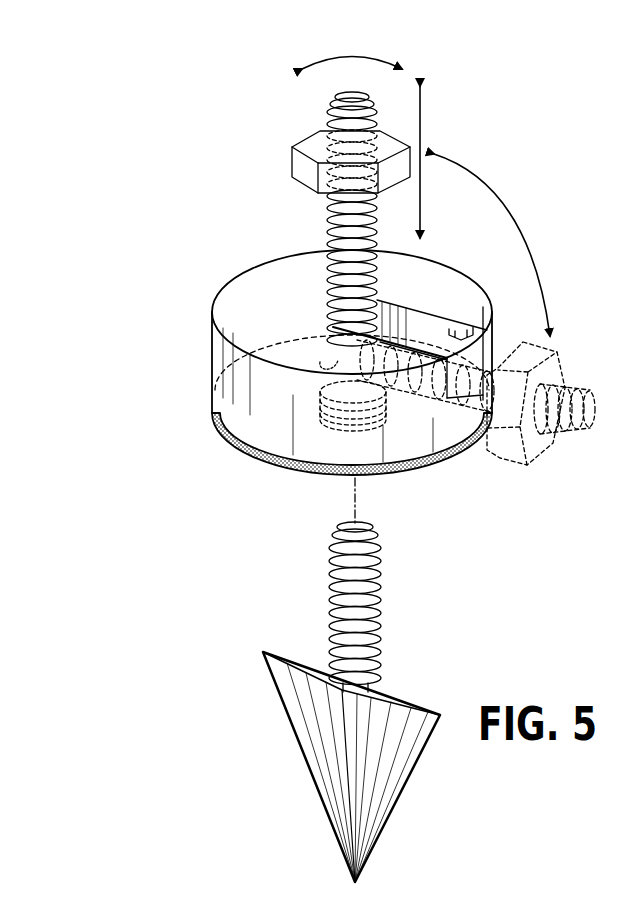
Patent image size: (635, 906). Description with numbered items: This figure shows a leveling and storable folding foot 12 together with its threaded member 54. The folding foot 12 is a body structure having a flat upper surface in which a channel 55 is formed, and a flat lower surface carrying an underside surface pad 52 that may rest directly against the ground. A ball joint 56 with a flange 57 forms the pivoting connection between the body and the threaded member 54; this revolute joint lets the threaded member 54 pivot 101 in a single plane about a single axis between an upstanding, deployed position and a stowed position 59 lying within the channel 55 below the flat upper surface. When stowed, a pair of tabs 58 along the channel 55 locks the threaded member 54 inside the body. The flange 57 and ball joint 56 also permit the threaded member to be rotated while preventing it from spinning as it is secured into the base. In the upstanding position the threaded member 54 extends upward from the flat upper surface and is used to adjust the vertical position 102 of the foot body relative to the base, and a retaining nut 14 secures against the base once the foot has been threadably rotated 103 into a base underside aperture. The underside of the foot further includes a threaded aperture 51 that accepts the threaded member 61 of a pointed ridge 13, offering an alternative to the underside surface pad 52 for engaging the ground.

The folding foot 12 is at (205, 238).
The pointed ridge 13 is at (230, 763).
The retaining nut 14 is at (294, 165).
The threaded aperture 51 is at (338, 428).
The underside surface pad 52 is at (258, 464).
The threaded member 54 is at (327, 219).
The channel 55 is at (425, 322).
The ball joint 56 is at (342, 371).
The flange 57 is at (343, 352).
The tabs 58 is at (462, 328).
The stowed position 59 is at (558, 456).
The threaded member of pointed ridge 61 is at (384, 572).
The pivot 101 is at (503, 212).
The vertical position 102 is at (422, 104).
The threadable rotation 103 is at (372, 54).